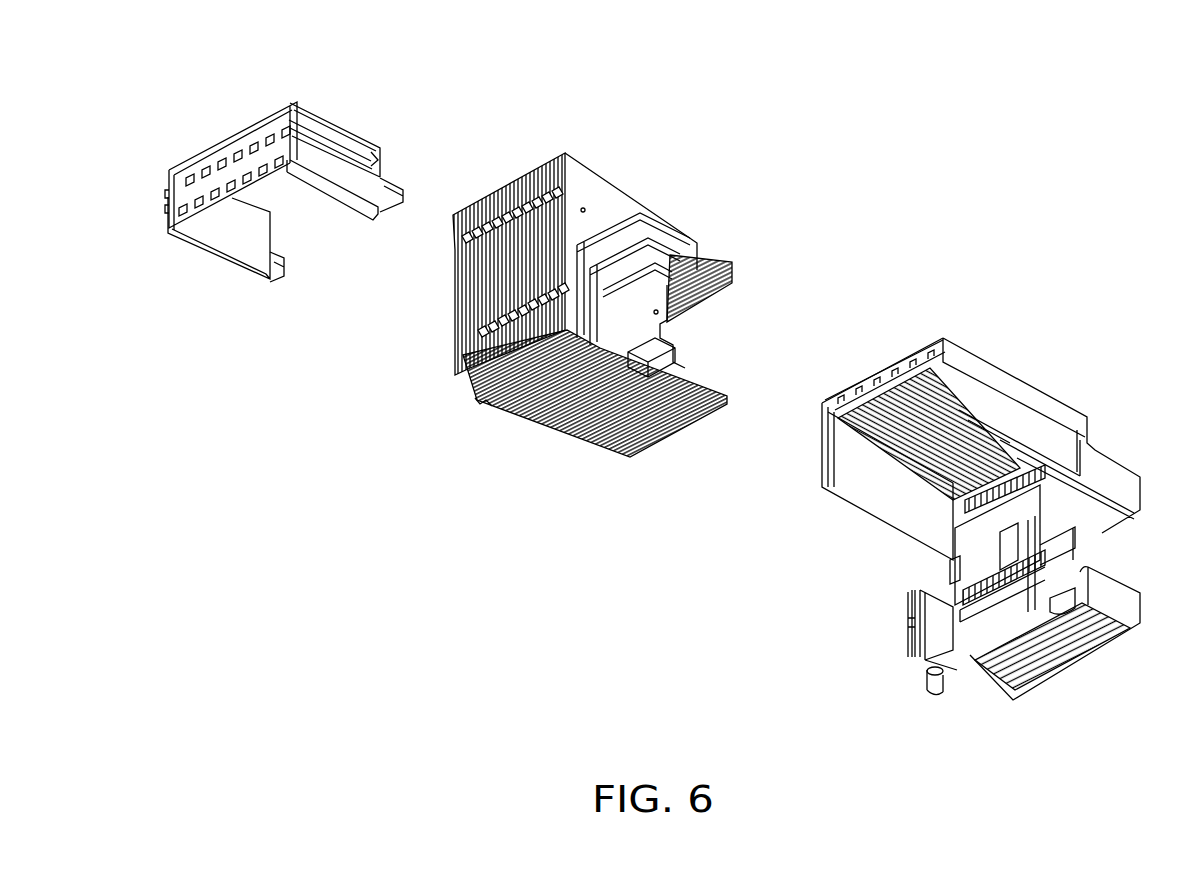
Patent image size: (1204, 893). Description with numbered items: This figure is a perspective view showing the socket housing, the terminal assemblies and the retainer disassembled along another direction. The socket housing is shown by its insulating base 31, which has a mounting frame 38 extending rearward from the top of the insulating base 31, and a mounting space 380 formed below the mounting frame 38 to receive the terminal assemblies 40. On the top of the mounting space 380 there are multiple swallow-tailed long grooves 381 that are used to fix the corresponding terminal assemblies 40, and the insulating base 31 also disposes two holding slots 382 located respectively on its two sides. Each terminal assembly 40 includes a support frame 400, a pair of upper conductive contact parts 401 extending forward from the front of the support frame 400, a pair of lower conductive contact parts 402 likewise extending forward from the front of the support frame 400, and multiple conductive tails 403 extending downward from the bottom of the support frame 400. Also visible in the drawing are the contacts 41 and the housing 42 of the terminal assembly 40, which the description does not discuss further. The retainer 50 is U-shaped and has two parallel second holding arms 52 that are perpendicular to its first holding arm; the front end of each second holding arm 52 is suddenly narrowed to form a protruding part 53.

The insulating base 31 is at (1103, 473).
The mounting frame 38 is at (830, 440).
The mounting space 380 is at (870, 467).
The swallow-tailed long grooves 381 is at (873, 410).
The holding slots 382 is at (1065, 550).
The terminal assembly 40 is at (600, 174).
The support frame 400 is at (610, 198).
The upper conductive contact parts 401 is at (732, 276).
The lower conductive contact parts 402 is at (730, 397).
The conductive tails 403 is at (490, 398).
The contacts 41 is at (549, 160).
The insulative housing 42 is at (567, 163).
The retainer 50 is at (250, 124).
The second holding arms 52 is at (318, 112).
The protruding part 53 is at (387, 188).